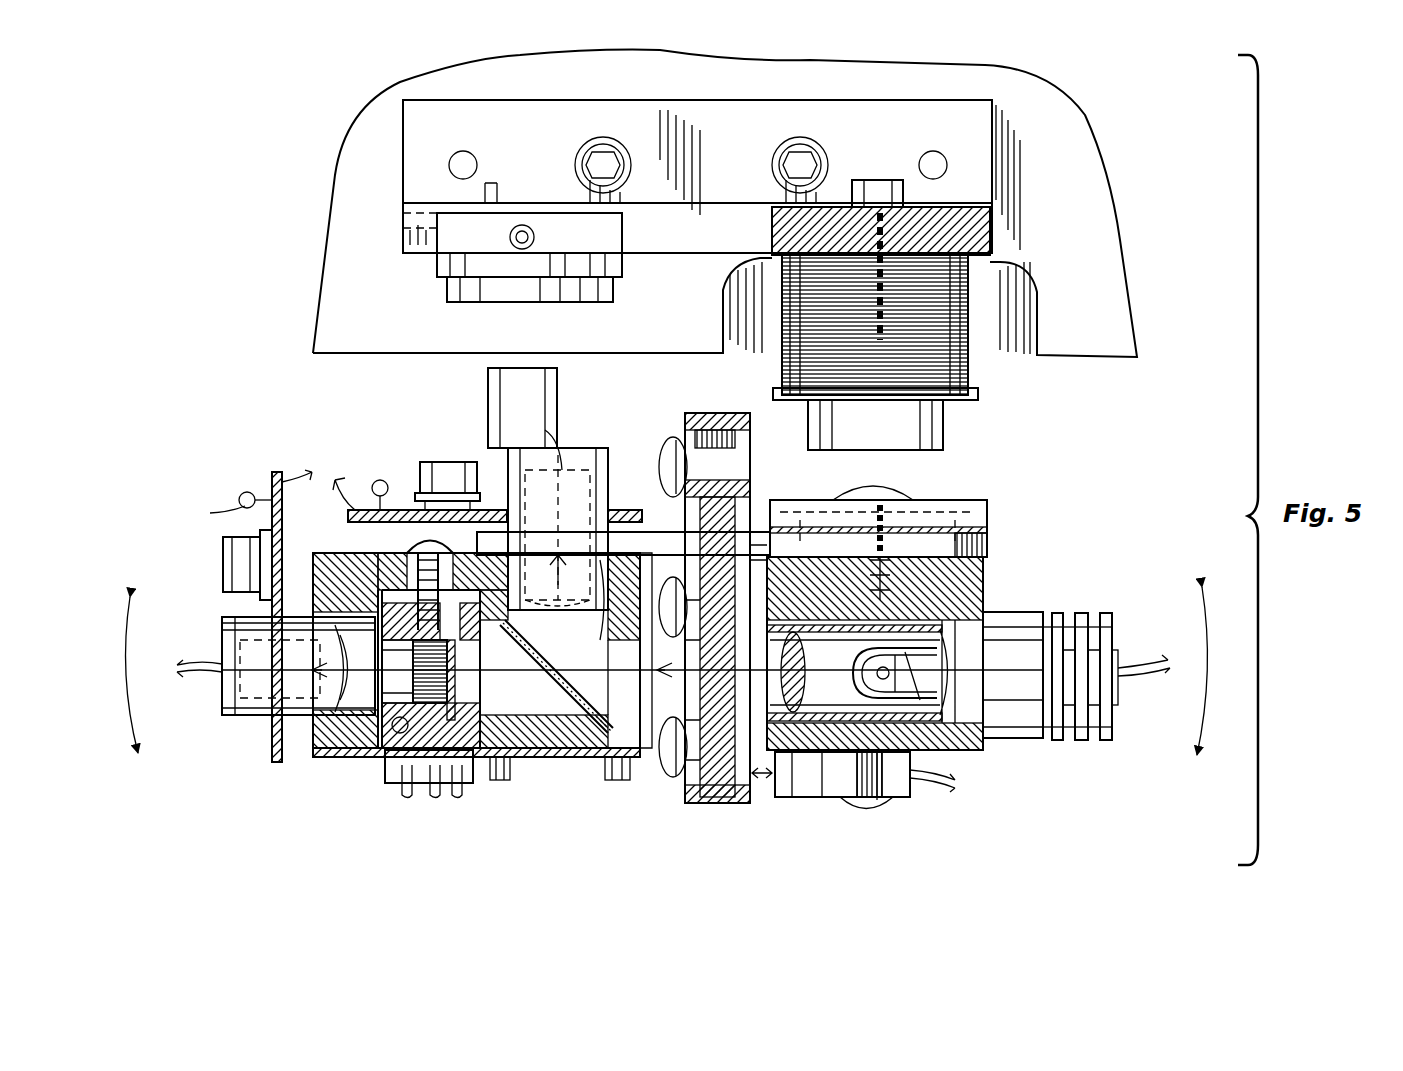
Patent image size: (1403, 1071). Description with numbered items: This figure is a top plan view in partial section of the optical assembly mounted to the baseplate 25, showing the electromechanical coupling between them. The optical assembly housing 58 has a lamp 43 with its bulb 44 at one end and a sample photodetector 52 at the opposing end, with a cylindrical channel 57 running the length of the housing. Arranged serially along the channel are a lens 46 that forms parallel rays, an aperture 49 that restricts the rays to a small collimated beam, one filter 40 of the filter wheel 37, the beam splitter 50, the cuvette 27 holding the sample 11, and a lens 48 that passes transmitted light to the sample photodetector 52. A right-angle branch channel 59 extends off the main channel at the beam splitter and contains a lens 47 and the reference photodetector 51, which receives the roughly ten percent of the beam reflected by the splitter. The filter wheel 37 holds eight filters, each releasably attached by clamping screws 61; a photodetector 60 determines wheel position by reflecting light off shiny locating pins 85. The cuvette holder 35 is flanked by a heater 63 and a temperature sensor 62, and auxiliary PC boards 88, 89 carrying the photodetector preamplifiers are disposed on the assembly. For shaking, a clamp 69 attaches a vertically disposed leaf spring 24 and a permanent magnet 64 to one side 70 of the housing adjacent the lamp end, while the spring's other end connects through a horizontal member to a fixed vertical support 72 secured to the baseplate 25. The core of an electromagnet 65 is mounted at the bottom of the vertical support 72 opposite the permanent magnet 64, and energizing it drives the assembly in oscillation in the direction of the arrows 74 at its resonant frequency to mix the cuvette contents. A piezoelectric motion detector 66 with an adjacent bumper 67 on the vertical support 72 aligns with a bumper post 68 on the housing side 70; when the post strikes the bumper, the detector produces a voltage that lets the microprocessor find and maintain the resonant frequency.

The baseplate 25 is at (352, 140).
The fixed vertical support 72 is at (400, 230).
The motion detector 66 is at (437, 268).
The bumper 67 is at (447, 286).
The electromagnet 65 is at (970, 380).
The bumper post 68 is at (488, 385).
The reference photodetector 51 is at (560, 470).
The lens 47 is at (606, 495).
The right-angle branch channel 59 is at (598, 560).
The auxiliary PC board 88 is at (379, 478).
The auxiliary PC board 89 is at (245, 500).
The cuvette 27 is at (505, 757).
The beam splitter 50 is at (555, 735).
The filter wheel 37 is at (736, 413).
The clamping screws 61 is at (668, 450).
The filter 40 is at (660, 757).
The locating pins 85 is at (718, 803).
The photodetector 60 is at (770, 790).
The side of the optical assembly housing 70 is at (778, 560).
The clamp 69 is at (965, 500).
The leaf spring 24 is at (975, 530).
The permanent magnet 64 is at (990, 541).
The optical assembly housing 58 is at (996, 577).
The aperture 49 is at (795, 725).
The lens 46 is at (820, 755).
The lamp 43 is at (1022, 612).
The bulb 44 is at (925, 782).
The cylindrical channel 57 is at (877, 800).
The sample photodetector 52 is at (232, 720).
The lens 48 is at (312, 720).
The heater 63 is at (385, 745).
The temperature sensor 62 is at (393, 750).
The sample 11 is at (440, 748).
The cuvette holder 35 is at (413, 762).
The arrows 74 is at (123, 663).